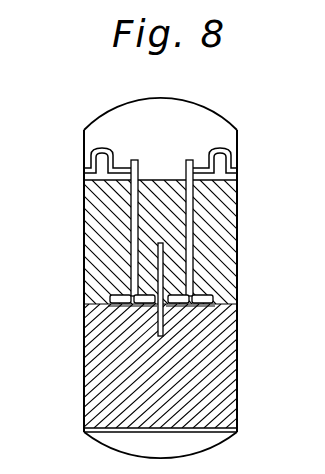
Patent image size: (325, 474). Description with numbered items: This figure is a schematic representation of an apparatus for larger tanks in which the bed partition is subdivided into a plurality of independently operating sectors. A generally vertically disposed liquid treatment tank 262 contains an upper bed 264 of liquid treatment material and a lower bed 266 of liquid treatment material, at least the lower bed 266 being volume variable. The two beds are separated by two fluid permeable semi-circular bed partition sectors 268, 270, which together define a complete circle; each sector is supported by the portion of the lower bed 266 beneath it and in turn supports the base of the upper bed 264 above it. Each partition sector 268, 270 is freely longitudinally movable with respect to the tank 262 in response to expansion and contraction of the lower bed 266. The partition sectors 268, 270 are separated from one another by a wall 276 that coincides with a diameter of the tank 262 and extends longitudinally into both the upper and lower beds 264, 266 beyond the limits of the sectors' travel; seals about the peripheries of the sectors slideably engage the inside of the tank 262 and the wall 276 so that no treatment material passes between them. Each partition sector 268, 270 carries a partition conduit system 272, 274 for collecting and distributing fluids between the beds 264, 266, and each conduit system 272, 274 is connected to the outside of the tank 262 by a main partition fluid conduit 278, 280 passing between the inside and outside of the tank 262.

The liquid treatment tank 262 is at (237, 352).
The upper bed 264 is at (147, 184).
The lower bed 266 is at (101, 413).
The bed partition sector 268 is at (149, 366).
The bed partition sector 270 is at (176, 366).
The partition conduit system 272 is at (108, 296).
The partition conduit system 274 is at (214, 296).
The wall 276 is at (161, 336).
The main partition fluid conduit 278 is at (130, 213).
The main partition fluid conduit 280 is at (194, 212).